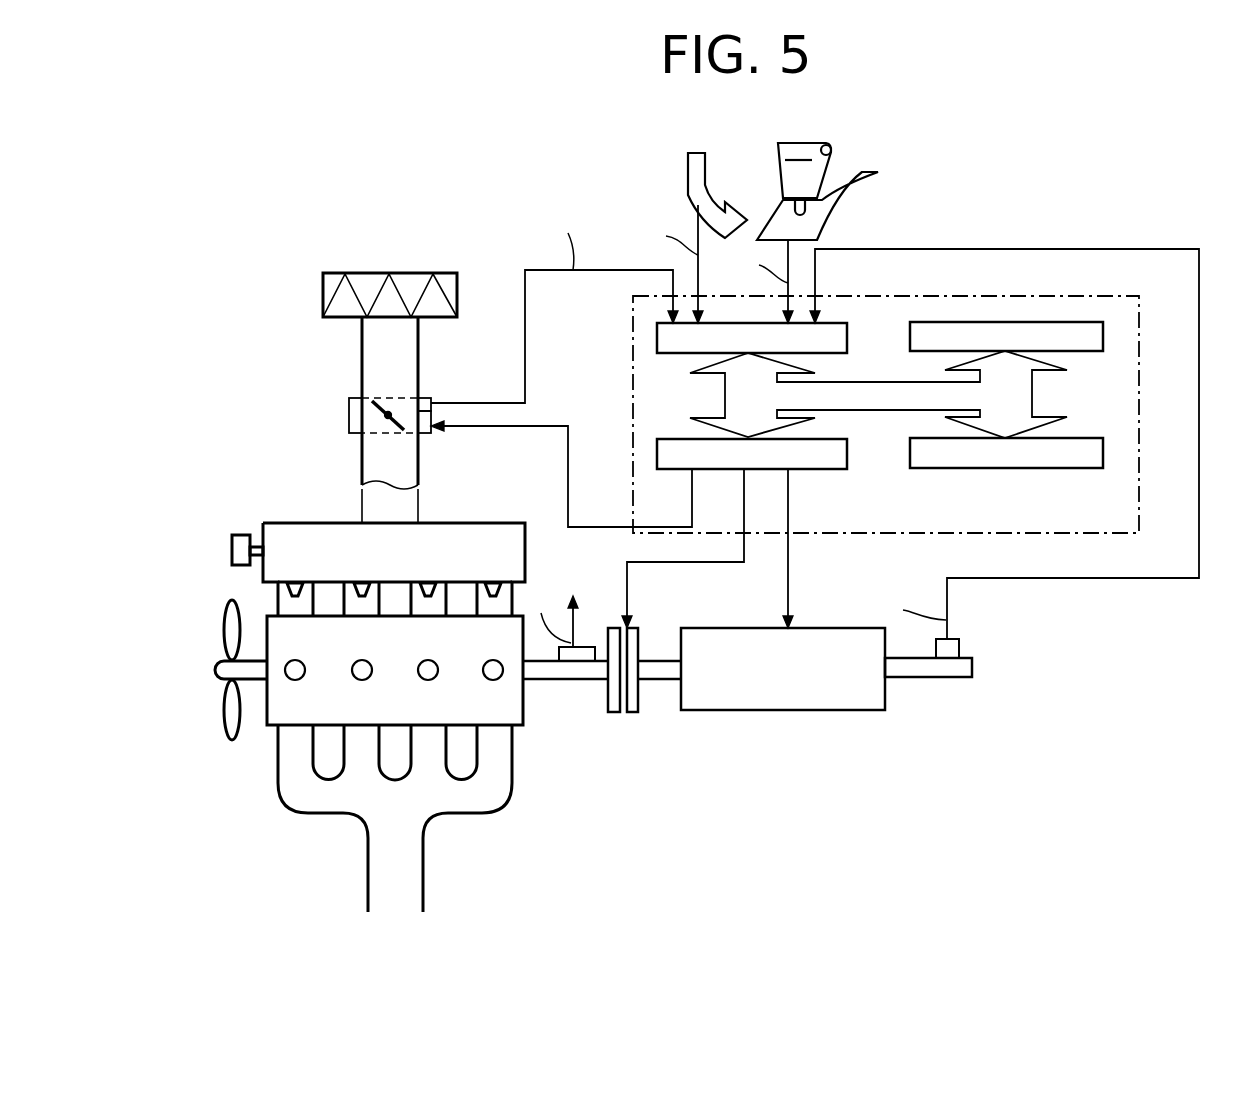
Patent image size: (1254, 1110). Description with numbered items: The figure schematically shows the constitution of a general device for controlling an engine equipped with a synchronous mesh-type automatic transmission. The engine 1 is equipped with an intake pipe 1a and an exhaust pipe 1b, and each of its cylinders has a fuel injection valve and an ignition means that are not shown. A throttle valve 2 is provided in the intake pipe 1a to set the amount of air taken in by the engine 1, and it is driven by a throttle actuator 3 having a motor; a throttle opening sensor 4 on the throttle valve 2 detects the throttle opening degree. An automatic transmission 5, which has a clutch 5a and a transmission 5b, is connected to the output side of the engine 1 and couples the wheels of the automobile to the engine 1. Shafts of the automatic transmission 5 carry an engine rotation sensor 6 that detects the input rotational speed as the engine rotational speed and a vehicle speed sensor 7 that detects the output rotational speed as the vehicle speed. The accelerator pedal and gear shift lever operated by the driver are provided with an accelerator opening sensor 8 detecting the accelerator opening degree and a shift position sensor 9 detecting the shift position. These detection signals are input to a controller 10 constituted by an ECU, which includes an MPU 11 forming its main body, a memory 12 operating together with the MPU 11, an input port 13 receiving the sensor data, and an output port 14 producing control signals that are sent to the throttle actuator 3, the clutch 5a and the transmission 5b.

The engine 1 is at (263, 726).
The intake pipe 1a is at (362, 474).
The exhaust pipe 1b is at (362, 828).
The throttle valve 2 is at (382, 398).
The throttle actuator 3 is at (428, 434).
The throttle opening sensor 4 is at (426, 398).
The automatic transmission 5 is at (714, 788).
The clutch 5a is at (626, 715).
The transmission 5b is at (851, 711).
The engine rotation sensor 6 is at (556, 662).
The vehicle speed sensor 7 is at (960, 648).
The accelerator opening sensor 8 is at (688, 186).
The shift position sensor 9 is at (842, 205).
The controller 10 is at (822, 541).
The MPU 11 is at (1094, 351).
The memory 12 is at (1089, 468).
The input port 13 is at (668, 353).
The output port 14 is at (672, 469).